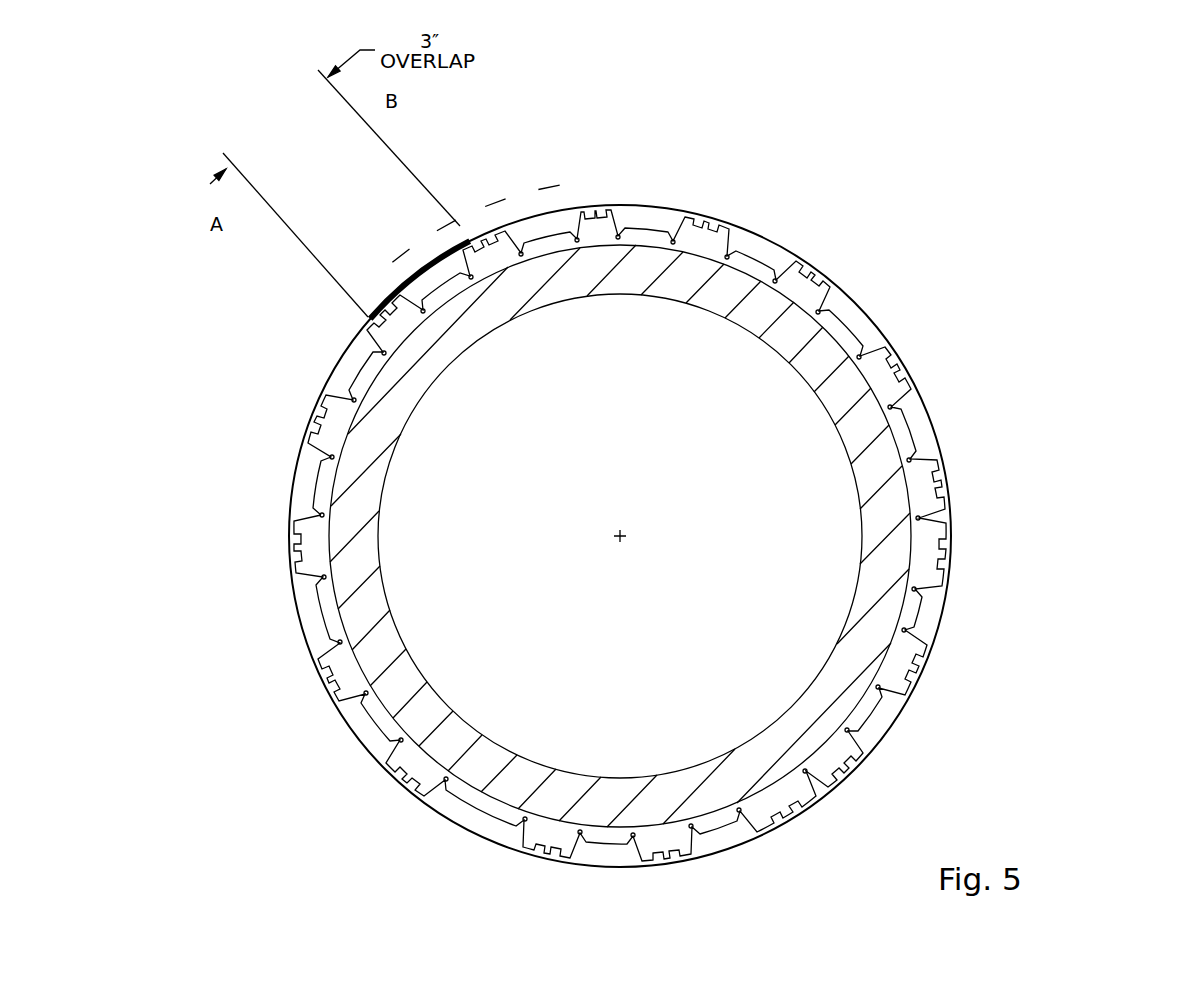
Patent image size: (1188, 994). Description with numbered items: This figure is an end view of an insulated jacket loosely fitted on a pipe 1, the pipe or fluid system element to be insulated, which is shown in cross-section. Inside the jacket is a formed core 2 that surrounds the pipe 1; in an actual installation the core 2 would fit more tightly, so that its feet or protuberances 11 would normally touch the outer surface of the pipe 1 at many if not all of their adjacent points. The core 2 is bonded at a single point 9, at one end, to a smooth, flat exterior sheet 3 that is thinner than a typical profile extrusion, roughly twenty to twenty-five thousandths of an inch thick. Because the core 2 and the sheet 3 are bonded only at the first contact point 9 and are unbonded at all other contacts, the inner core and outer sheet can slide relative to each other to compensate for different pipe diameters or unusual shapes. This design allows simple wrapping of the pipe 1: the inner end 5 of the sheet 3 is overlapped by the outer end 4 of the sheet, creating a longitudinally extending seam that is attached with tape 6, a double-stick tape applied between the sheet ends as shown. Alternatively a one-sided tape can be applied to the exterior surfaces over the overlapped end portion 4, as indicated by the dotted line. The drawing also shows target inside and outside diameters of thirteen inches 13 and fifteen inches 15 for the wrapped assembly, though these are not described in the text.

The pipe 1 is at (853, 527).
The core 2 is at (853, 327).
The exterior sheet 3 is at (760, 230).
The outer end 4 is at (433, 252).
The inner end 5 is at (450, 253).
The tape 6 is at (465, 235).
The point 9 is at (370, 312).
The feet 11 is at (326, 518).
The 13 inch ID target 13 is at (866, 377).
The 15 inch OD target 15 is at (930, 410).